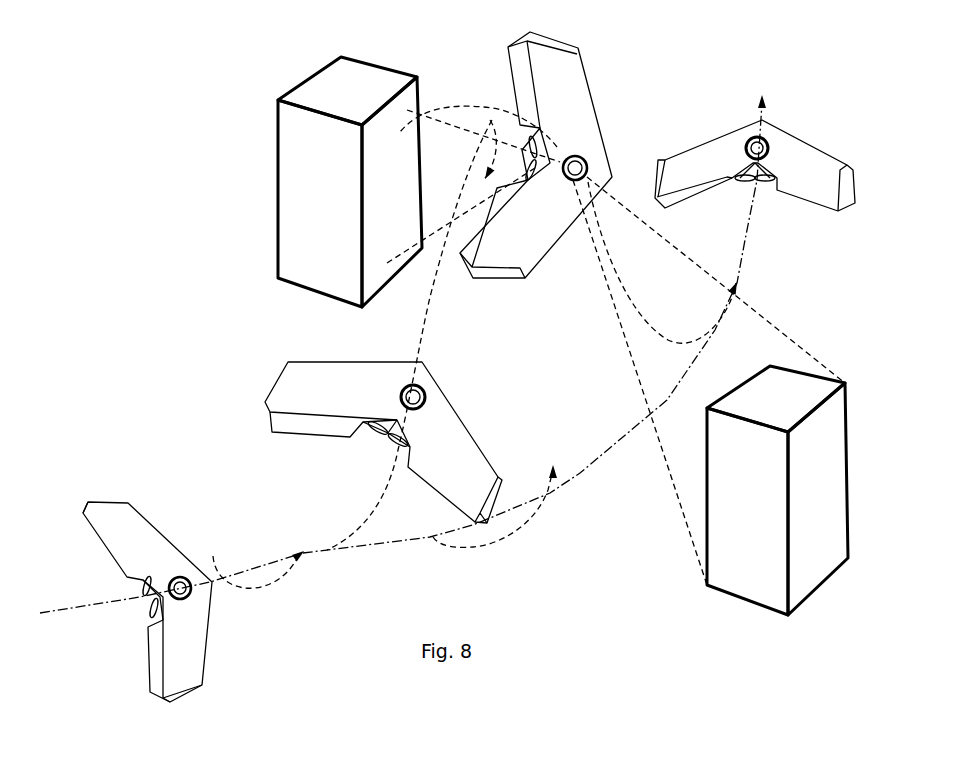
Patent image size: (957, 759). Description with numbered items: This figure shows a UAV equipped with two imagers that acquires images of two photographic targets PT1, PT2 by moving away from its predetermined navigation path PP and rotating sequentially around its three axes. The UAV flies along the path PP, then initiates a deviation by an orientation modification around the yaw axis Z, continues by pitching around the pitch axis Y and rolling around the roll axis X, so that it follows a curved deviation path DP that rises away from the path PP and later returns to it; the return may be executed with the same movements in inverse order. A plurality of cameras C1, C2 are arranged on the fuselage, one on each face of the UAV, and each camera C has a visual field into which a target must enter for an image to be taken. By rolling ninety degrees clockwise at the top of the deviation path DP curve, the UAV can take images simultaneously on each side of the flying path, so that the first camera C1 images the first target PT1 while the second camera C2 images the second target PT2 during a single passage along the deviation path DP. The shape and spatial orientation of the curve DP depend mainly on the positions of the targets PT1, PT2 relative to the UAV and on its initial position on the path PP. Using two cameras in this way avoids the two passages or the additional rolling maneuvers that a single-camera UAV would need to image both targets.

The photographic target PT1 is at (320, 182).
The photographic target PT2 is at (772, 503).
The camera C is at (423, 393).
The camera C1 is at (472, 184).
The camera C2 is at (709, 381).
The deviation path DP is at (432, 307).
The predetermined path PP is at (403, 354).
The roll axis X is at (483, 117).
The pitch axis Y is at (495, 516).
The yaw axis Z is at (258, 584).